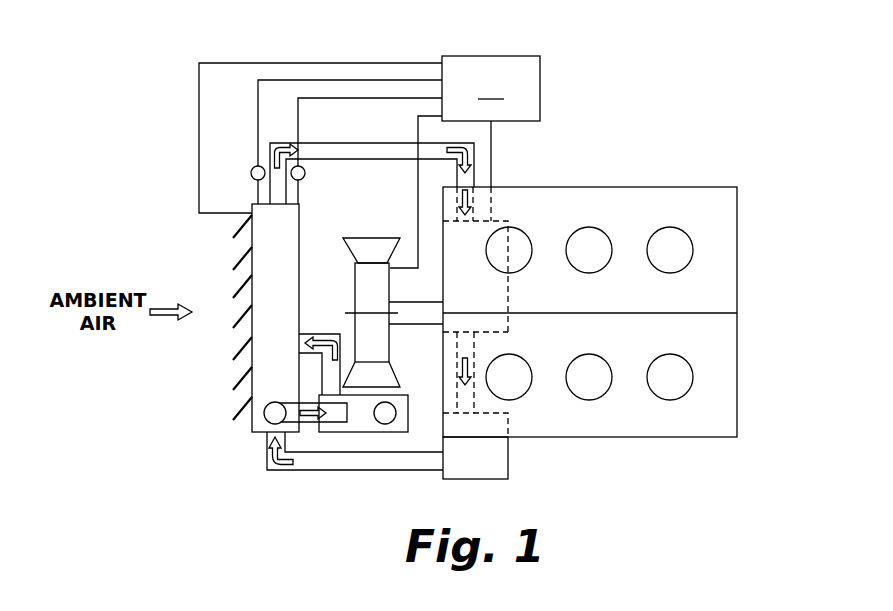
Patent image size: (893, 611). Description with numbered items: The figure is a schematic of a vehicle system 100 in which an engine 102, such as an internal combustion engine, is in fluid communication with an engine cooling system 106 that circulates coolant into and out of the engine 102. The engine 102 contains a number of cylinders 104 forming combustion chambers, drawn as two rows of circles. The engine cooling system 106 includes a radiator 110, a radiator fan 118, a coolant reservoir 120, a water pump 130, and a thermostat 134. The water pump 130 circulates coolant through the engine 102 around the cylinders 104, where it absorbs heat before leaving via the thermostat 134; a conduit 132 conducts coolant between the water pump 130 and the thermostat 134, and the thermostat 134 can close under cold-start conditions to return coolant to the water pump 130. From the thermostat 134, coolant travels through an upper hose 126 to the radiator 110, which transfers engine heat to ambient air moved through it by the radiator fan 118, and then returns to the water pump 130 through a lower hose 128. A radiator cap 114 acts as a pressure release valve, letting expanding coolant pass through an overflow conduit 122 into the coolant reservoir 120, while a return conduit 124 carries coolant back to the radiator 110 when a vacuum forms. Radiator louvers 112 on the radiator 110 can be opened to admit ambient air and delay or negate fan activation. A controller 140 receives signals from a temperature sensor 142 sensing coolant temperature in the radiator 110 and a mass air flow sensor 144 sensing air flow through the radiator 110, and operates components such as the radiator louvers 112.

The vehicle system 100 is at (702, 101).
The engine 102 is at (737, 238).
The cylinders 104 is at (654, 236).
The engine cooling system 106 is at (181, 204).
The radiator 110 is at (300, 207).
The radiator louvers 112 is at (240, 313).
The radiator cap 114 is at (262, 421).
The radiator fan 118 is at (391, 298).
The coolant reservoir 120 is at (408, 412).
The overflow conduit 122 is at (310, 402).
The return conduit 124 is at (312, 334).
The upper hose 126 is at (316, 470).
The lower hose 128 is at (325, 143).
The water pump 130 is at (508, 222).
The conduit 132 is at (474, 352).
The thermostat 134 is at (508, 455).
The controller 140 is at (399, 162).
The temperature sensor 142 is at (253, 167).
The mass air flow sensor 144 is at (305, 173).